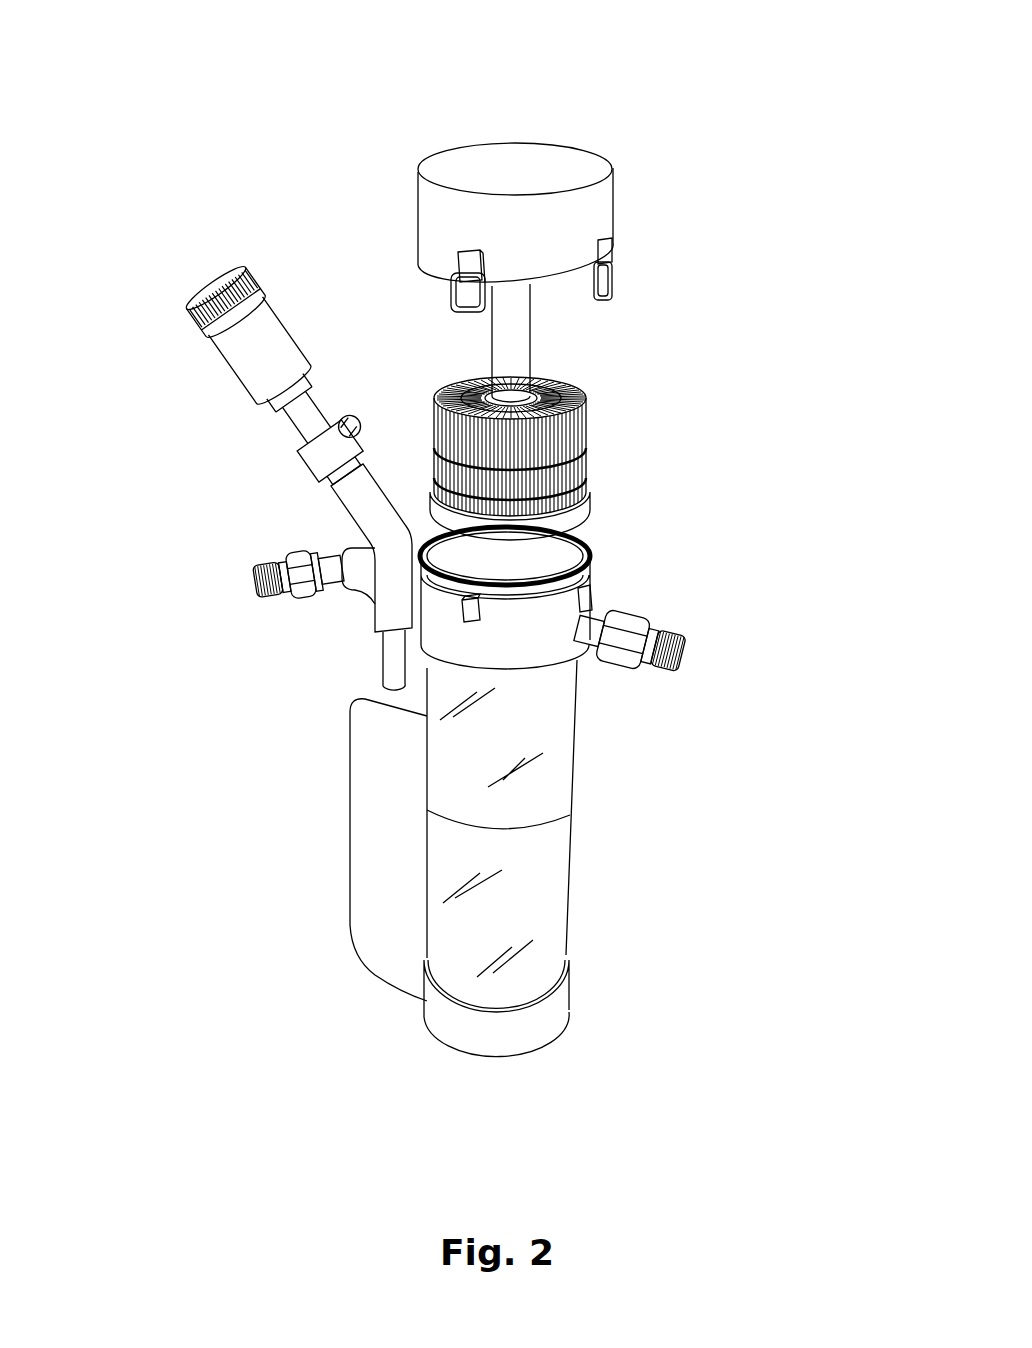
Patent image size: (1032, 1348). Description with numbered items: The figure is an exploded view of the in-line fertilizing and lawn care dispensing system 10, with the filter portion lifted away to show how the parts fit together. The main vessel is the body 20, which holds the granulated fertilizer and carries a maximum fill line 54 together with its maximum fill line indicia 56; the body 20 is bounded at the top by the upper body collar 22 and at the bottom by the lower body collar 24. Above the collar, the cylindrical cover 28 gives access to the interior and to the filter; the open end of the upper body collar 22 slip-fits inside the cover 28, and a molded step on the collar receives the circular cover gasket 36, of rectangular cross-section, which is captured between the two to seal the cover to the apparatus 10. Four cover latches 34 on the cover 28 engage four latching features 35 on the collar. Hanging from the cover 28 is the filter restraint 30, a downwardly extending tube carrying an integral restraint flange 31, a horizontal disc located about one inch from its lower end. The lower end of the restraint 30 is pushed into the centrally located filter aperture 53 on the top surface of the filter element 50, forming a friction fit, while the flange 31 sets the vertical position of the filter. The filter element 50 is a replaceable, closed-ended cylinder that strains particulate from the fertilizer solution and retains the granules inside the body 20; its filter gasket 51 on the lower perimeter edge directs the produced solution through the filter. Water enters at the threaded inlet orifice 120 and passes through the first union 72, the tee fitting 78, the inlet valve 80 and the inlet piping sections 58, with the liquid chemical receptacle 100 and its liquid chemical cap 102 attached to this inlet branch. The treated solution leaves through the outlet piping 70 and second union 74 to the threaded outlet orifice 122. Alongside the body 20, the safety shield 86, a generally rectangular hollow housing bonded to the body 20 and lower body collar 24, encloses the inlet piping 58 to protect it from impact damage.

The in-line fertilizing and lawn care dispensing system 10 is at (122, 104).
The body 20 is at (548, 882).
The upper body collar 22 is at (555, 636).
The lower body collar 24 is at (560, 985).
The cover 28 is at (587, 212).
The filter restraint 30 is at (525, 325).
The restraint flange 31 is at (590, 388).
The cover latches 34 is at (603, 252).
The latching features 35 is at (472, 604).
The cover gasket 36 is at (586, 548).
The filter element 50 is at (600, 428).
The filter gasket 51 is at (594, 512).
The filter aperture 53 is at (445, 378).
The maximum fill line 54 is at (562, 818).
The maximum fill line indicia 56 is at (455, 822).
The inlet piping sections 58 is at (392, 640).
The outlet piping 70 is at (580, 632).
The first union 72 is at (305, 560).
The second union 74 is at (618, 662).
The tee fitting 78 is at (385, 605).
The inlet valve 80 is at (322, 452).
The safety shield 86 is at (378, 815).
The liquid chemical receptacle 100 is at (240, 363).
The liquid chemical cap 102 is at (208, 293).
The inlet orifice 120 is at (285, 546).
The outlet orifice 122 is at (668, 660).